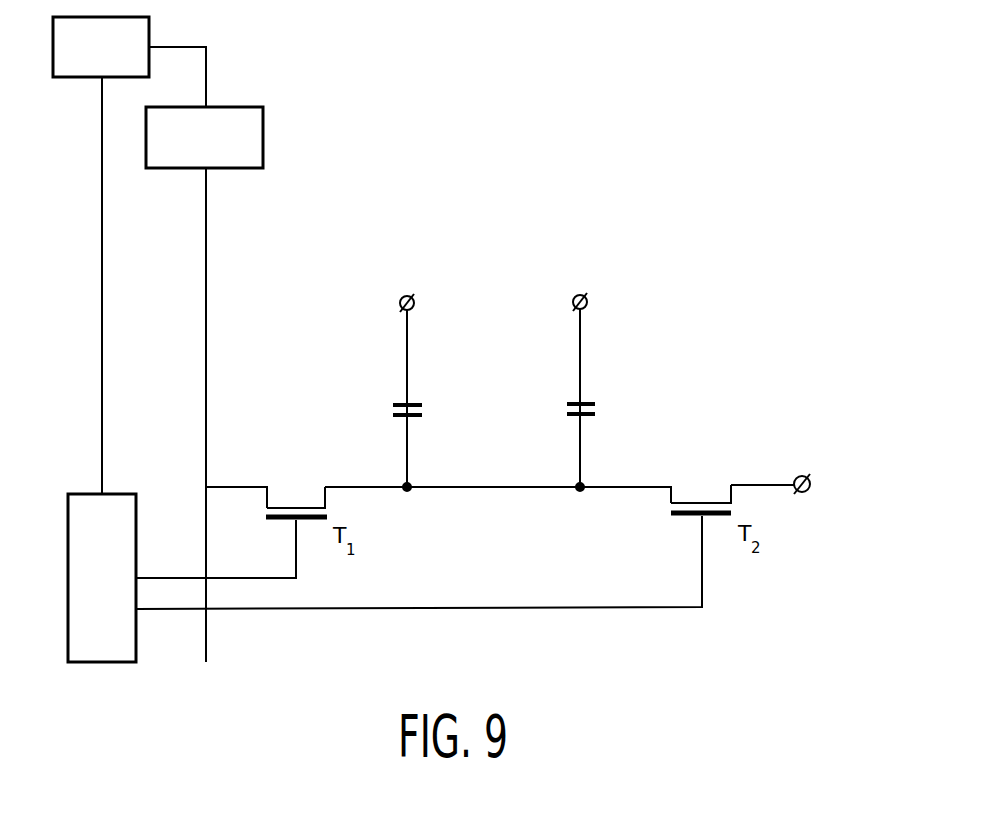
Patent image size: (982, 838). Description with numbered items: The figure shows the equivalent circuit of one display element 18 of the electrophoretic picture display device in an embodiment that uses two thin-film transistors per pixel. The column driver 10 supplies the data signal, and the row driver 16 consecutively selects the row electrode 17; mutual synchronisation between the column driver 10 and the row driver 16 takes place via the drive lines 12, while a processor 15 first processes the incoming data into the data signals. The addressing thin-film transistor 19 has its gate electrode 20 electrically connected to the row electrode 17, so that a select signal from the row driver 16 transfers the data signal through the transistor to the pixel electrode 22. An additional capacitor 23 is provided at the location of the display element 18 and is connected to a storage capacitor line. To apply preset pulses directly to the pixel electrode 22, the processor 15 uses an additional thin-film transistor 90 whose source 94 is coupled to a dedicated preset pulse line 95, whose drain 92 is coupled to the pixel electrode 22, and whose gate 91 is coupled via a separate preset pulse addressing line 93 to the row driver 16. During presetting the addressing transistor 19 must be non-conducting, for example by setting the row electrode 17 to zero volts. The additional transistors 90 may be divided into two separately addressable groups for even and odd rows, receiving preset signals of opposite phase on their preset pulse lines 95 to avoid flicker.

The column driver 10 is at (253, 132).
The drive lines 12 is at (169, 354).
The processor 15 is at (73, 70).
The row driver 16 is at (83, 503).
The row electrode 17 is at (172, 576).
The display element 18 is at (423, 409).
The thin-film transistor 19 is at (318, 509).
The gate electrode 20 is at (304, 520).
The pixel electrode 22 is at (446, 490).
The additional capacitor 23 is at (567, 404).
The additional thin-film transistor 90 is at (722, 507).
The gate 91 is at (706, 518).
The drain 92 is at (620, 490).
The preset pulse addressing line 93 is at (386, 612).
The source 94 is at (755, 482).
The preset pulse line 95 is at (811, 484).